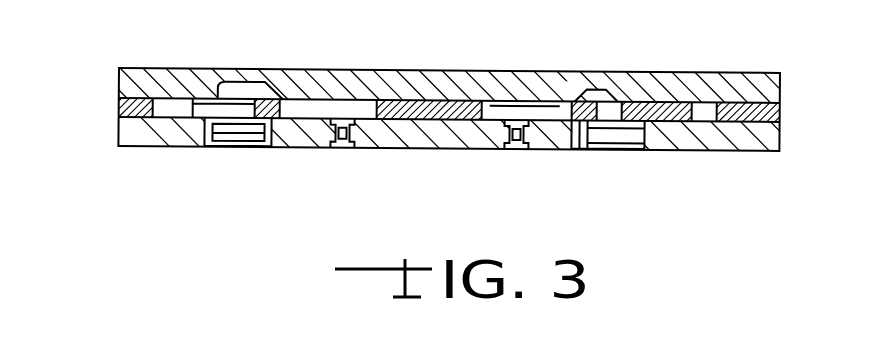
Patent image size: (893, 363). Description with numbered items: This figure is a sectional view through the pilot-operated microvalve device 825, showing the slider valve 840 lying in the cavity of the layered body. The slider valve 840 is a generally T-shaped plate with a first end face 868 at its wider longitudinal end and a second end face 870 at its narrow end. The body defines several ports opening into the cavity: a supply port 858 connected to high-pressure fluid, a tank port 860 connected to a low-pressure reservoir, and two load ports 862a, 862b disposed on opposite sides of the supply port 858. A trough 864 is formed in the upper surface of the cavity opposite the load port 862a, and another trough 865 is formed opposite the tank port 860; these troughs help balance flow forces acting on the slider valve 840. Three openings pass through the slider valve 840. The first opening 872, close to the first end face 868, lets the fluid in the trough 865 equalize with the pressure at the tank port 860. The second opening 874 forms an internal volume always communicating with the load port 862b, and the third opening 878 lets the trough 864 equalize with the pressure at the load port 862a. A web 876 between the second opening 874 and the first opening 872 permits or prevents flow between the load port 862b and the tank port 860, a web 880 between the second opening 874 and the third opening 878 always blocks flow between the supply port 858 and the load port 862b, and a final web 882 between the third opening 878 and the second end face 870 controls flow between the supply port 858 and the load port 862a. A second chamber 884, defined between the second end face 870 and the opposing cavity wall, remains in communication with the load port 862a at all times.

The microvalve device 825 is at (148, 210).
The slider valve 840 is at (378, 105).
The supply port 858 is at (343, 149).
The tank port 860 is at (626, 150).
The load port 862a is at (243, 138).
The load port 862b is at (517, 150).
The trough 864 is at (248, 84).
The trough 865 is at (590, 90).
The first end face 868 is at (692, 106).
The second end face 870 is at (257, 103).
The first opening 872 is at (615, 105).
The second opening 874 is at (572, 112).
The web 876 is at (588, 90).
The third opening 878 is at (373, 105).
The web 880 is at (501, 70).
The web 882 is at (706, 107).
The second chamber 884 is at (170, 113).